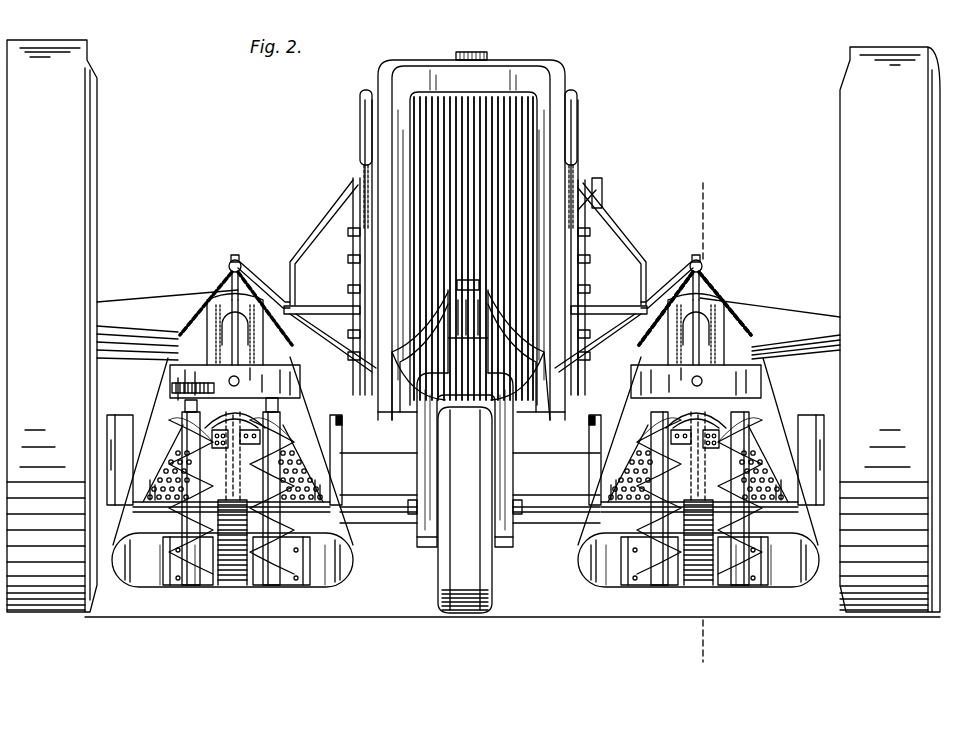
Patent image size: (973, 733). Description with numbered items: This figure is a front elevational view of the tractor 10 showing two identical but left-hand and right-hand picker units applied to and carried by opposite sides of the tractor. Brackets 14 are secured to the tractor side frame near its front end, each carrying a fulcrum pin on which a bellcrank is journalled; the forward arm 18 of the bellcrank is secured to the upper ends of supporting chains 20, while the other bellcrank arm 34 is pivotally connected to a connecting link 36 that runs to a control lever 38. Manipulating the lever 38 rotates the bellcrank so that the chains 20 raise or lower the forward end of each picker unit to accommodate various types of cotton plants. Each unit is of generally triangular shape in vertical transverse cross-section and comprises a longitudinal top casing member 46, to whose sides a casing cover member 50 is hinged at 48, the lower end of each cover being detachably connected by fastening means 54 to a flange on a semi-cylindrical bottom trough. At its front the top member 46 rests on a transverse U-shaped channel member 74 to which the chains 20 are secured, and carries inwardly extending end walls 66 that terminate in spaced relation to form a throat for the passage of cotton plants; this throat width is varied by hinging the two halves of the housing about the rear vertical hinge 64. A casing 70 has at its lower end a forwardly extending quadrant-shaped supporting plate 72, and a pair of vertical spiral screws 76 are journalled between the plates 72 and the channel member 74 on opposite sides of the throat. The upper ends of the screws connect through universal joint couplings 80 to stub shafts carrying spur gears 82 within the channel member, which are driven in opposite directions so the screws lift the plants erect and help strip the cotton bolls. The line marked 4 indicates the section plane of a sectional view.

The section line 4- 4 is at (708, 202).
The tractor 10 is at (566, 84).
The bracket 14 is at (336, 344).
The forward arm 18 is at (263, 282).
The supporting chain 20 is at (716, 292).
The bellcrank arm 34 is at (322, 238).
The connecting link 36 is at (600, 192).
The control lever 38 is at (358, 136).
The top casing member 46 is at (220, 340).
The hinge 48 is at (210, 343).
The casing cover member 50 is at (148, 432).
The fastening means 54 is at (343, 425).
The hinge 64 is at (262, 440).
The end wall 66 is at (135, 515).
The casing 70 is at (132, 586).
The supporting plate 72 is at (690, 587).
The channel member 74 is at (285, 383).
The spiral screw 76 is at (176, 456).
The universal joint coupling 80 is at (186, 413).
The spur gear 82 is at (180, 393).